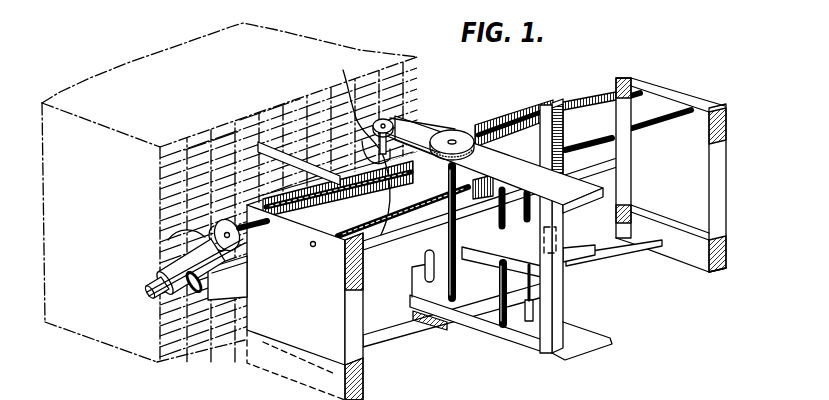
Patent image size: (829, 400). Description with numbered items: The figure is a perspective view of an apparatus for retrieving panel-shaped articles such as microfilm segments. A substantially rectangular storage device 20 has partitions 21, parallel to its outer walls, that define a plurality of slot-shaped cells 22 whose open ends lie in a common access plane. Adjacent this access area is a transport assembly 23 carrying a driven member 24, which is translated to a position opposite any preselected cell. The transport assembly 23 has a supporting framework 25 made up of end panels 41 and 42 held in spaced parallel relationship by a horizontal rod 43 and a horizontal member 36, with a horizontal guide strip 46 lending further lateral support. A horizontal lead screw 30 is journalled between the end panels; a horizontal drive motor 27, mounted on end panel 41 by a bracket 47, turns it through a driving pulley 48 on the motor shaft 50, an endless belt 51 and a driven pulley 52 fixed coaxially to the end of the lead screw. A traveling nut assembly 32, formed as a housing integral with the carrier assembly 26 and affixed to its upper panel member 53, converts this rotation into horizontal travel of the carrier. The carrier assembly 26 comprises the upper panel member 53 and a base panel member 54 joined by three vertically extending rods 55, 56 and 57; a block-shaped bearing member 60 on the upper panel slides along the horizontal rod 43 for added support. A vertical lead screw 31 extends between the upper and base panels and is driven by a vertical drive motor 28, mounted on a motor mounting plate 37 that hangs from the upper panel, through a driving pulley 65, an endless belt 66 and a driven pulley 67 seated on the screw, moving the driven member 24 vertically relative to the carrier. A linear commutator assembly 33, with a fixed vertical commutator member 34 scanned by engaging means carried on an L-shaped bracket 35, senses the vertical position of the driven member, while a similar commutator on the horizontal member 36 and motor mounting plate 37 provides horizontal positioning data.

The storage device 20 is at (229, 200).
The partitions 21 is at (190, 150).
The slot-shaped cells 22 is at (310, 127).
The transport assembly 23 is at (683, 166).
The driven member 24 is at (622, 268).
The supporting framework 25 is at (463, 276).
The carrier assembly 26 is at (514, 349).
The horizontal drive motor 27 is at (162, 296).
The vertical drive motor 28 is at (365, 148).
The horizontal lead screw 30 is at (577, 103).
The vertical lead screw 31 is at (456, 262).
The traveling nut assembly 32 is at (427, 212).
The linear commutator assembly 33 is at (590, 232).
The fixed vertical commutator member 34 is at (570, 315).
The L-shaped bracket 35 is at (493, 260).
The horizontal member 36 is at (520, 113).
The motor mounting plate 37 is at (392, 210).
The end panel 41 is at (318, 318).
The end panel 42 is at (673, 188).
The horizontal rod 43 is at (669, 113).
The horizontal guide strip 46 is at (393, 340).
The bracket 47 is at (235, 297).
The driving pulley 48 is at (146, 288).
The horizontal drive motor shaft 50 is at (196, 264).
The endless belt 51 is at (197, 233).
The driven pulley 52 is at (240, 247).
The upper panel member 53 is at (575, 185).
The base panel member 54 is at (590, 341).
The vertically extending rod 55 is at (502, 327).
The vertically extending rod 56 is at (530, 323).
The vertically extending rod 57 is at (425, 257).
The bearing member 60 is at (468, 195).
The driving pulley 65 is at (400, 113).
The endless belt 66 is at (437, 122).
The driven pulley 67 is at (460, 126).